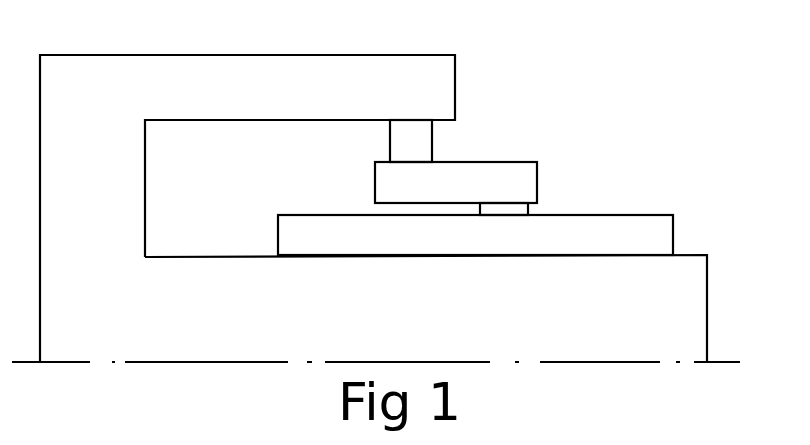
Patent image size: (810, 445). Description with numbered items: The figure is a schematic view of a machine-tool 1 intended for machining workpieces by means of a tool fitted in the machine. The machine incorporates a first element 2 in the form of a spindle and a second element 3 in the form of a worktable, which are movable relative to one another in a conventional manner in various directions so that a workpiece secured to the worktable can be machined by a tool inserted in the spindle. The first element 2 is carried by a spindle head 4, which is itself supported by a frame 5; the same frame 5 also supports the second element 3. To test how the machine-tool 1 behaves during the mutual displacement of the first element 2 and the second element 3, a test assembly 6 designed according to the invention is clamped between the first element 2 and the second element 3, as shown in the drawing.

The machine-tool 1 is at (385, 183).
The first element 2 is at (414, 150).
The second element 3 is at (611, 244).
The spindle head 4 is at (316, 76).
The frame 5 is at (232, 326).
The test assembly 6 is at (520, 153).